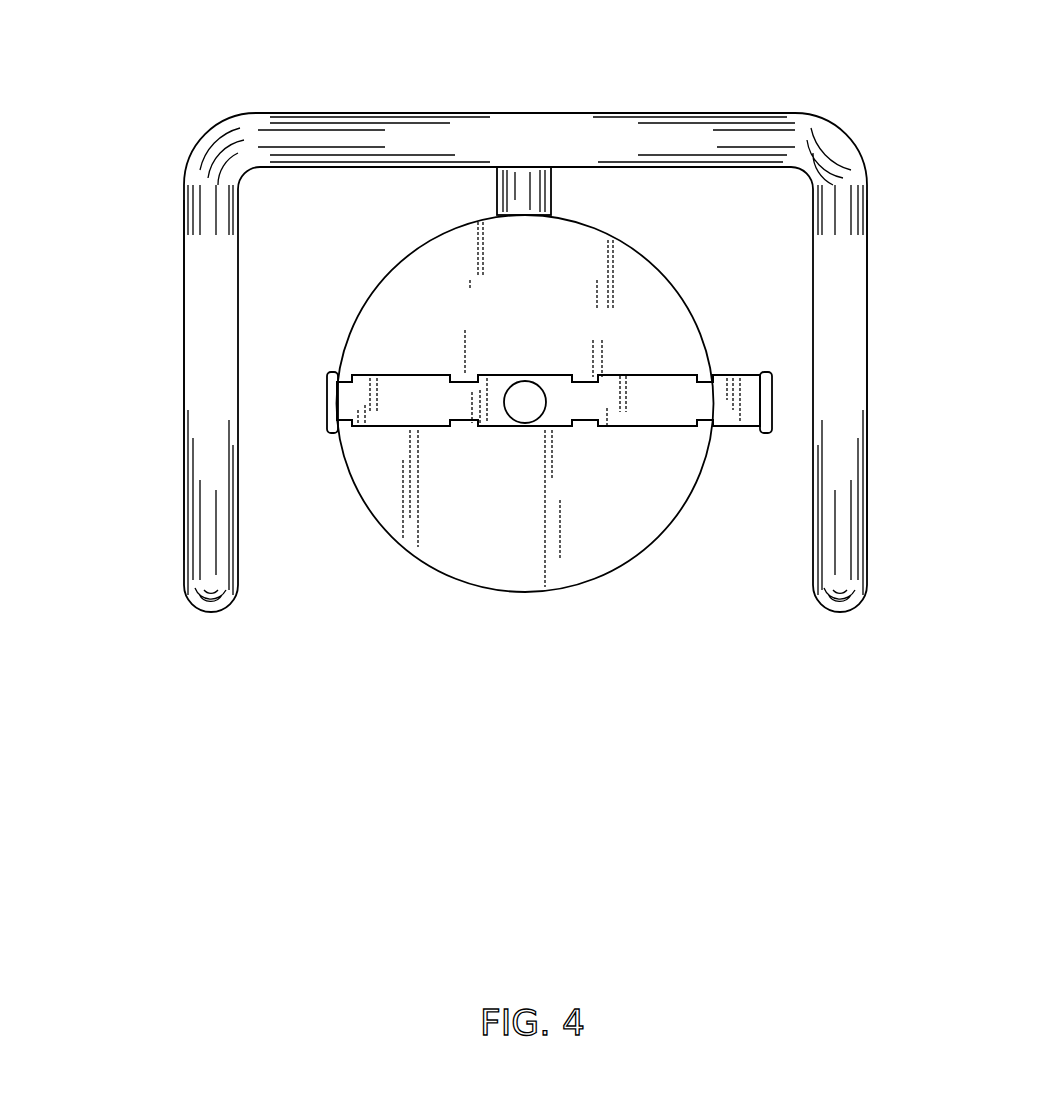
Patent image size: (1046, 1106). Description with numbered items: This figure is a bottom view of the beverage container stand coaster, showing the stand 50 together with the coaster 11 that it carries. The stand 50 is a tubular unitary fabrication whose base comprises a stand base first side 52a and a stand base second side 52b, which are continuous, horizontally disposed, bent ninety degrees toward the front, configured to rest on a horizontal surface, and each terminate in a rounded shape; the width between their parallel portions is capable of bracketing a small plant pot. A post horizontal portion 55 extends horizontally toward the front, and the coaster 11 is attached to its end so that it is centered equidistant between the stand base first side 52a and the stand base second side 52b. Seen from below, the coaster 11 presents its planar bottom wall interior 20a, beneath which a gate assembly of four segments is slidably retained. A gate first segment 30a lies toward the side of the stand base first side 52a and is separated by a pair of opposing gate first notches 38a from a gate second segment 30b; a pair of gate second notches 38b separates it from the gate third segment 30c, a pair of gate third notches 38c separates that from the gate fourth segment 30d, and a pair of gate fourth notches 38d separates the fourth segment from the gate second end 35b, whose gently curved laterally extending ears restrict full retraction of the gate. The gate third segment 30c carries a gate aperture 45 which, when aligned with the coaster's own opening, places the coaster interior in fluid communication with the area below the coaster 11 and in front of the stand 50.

The coaster 11 is at (532, 458).
The bottom wall interior 20a is at (465, 238).
The gate first segment 30a is at (736, 378).
The gate second segment 30b is at (633, 408).
The gate third segment 30c is at (487, 427).
The gate fourth segment 30d is at (394, 418).
The gate second end 35b is at (330, 375).
The gate first notches 38a is at (703, 379).
The gate second notches 38b is at (582, 382).
The gate third notches 38c is at (470, 424).
The gate fourth notches 38d is at (346, 372).
The gate aperture 45 is at (520, 406).
The stand 50 is at (633, 110).
The stand base first side 52a is at (863, 307).
The stand base second side 52b is at (183, 377).
The post horizontal portion 55 is at (549, 194).